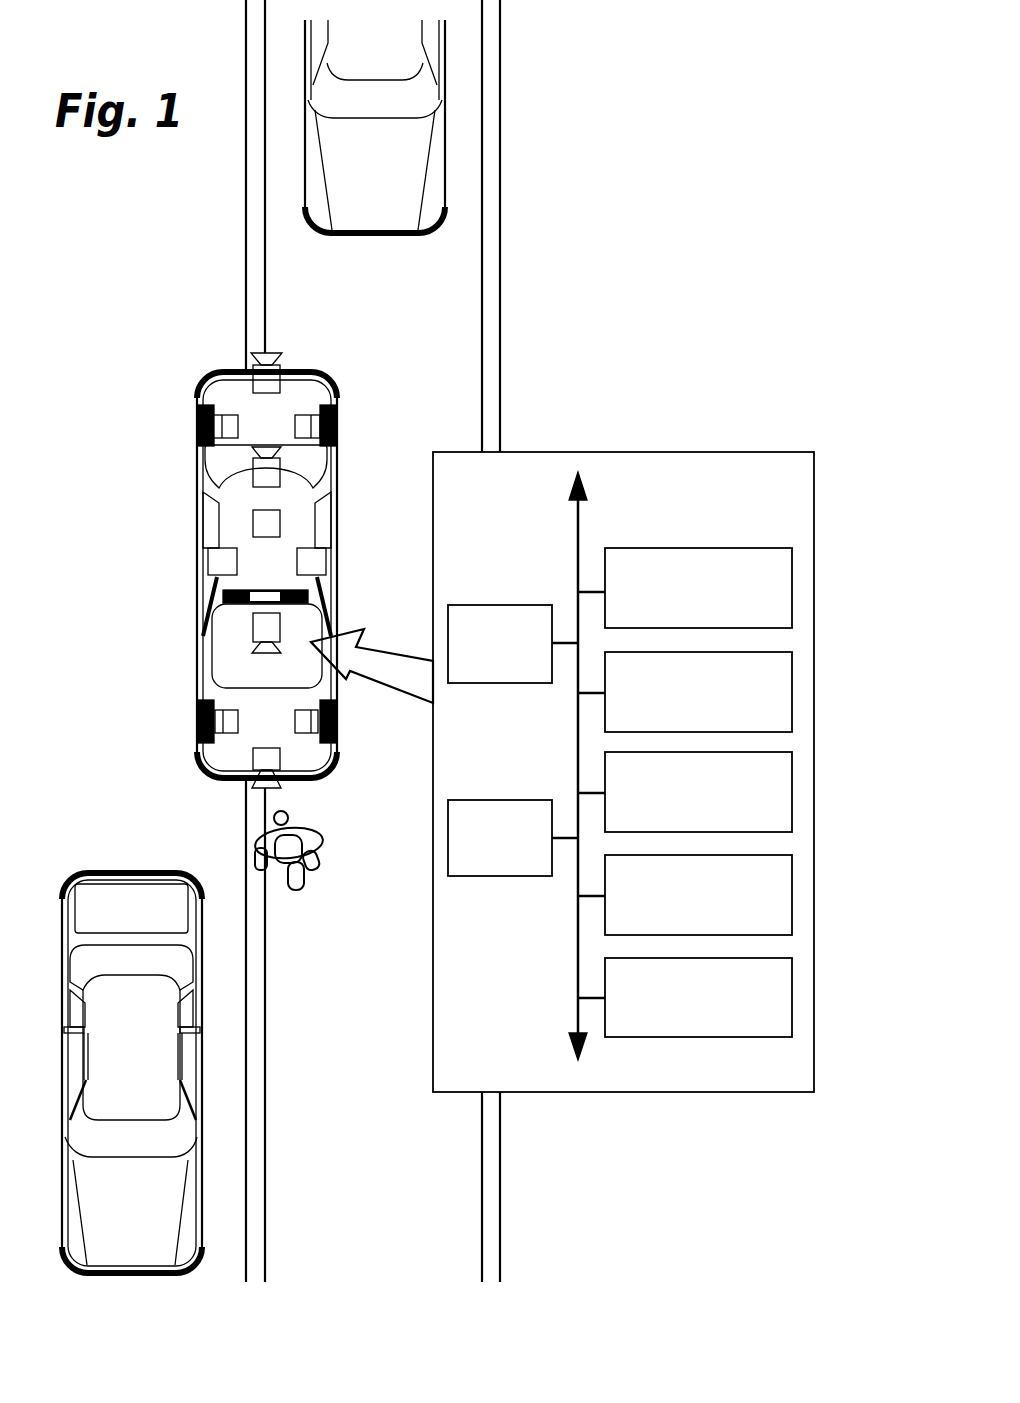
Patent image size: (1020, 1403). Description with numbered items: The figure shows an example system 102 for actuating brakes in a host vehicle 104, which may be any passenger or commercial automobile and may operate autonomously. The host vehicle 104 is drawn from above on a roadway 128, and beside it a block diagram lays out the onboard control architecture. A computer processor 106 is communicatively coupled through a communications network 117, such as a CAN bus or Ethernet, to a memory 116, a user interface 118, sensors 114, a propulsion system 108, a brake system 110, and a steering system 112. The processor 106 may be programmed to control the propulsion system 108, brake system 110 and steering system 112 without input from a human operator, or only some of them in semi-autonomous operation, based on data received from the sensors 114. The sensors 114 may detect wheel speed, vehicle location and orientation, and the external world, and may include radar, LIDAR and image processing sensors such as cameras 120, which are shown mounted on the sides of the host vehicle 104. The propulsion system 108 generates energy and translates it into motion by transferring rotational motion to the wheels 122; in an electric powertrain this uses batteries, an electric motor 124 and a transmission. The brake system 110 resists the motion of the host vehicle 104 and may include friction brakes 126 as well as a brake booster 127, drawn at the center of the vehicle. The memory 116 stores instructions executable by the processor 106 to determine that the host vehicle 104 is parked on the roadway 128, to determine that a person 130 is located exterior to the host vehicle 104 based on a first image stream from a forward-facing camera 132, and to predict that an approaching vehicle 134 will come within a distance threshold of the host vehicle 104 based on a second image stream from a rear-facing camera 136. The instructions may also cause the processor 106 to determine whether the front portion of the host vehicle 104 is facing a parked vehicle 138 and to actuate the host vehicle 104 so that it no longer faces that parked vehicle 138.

The system 102 is at (624, 84).
The host vehicle 104 is at (197, 476).
The computer processor 106 is at (679, 614).
The propulsion system 108 is at (679, 818).
The brake system 110 is at (679, 921).
The steering system 112 is at (679, 1024).
The sensors 114 is at (481, 864).
The memory 116 is at (679, 718).
The communications network 117 is at (578, 549).
The user interface 118 is at (481, 668).
The cameras 120 is at (313, 566).
The wheels 122 is at (198, 428).
The electric motor 124 is at (235, 432).
The friction brakes 126 is at (203, 385).
The brake booster 127 is at (267, 529).
The roadway 128 is at (355, 1188).
The person 130 is at (297, 889).
The forward-facing camera 132 is at (247, 780).
The approaching vehicle 134 is at (358, 186).
The rear-facing camera 136 is at (266, 377).
The parked vehicle 138 is at (115, 1229).